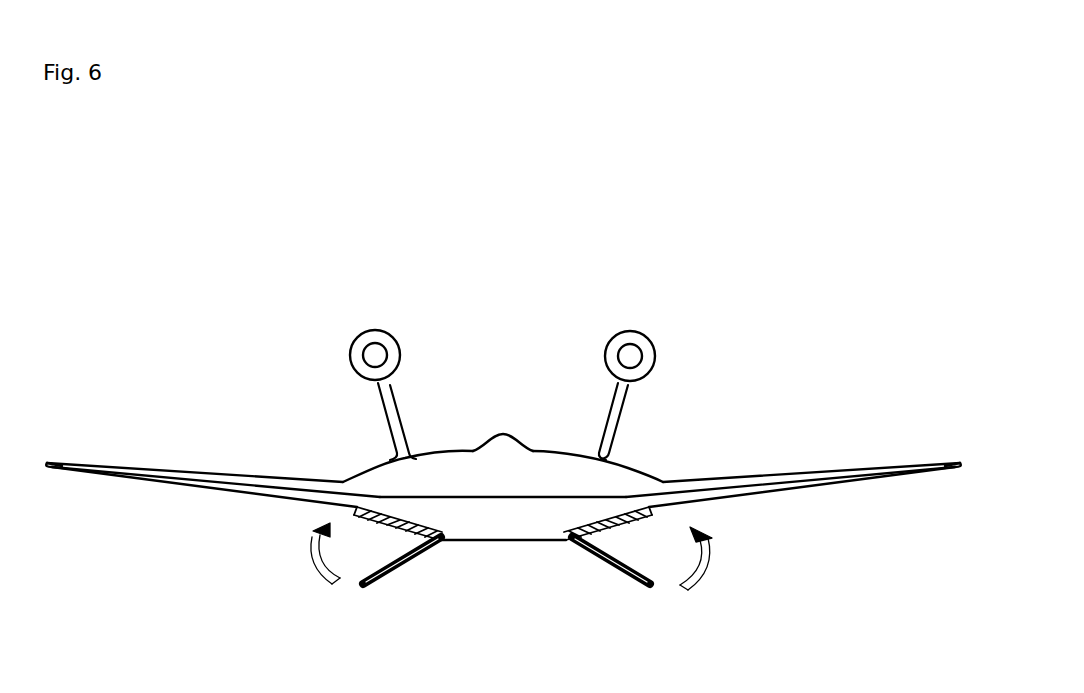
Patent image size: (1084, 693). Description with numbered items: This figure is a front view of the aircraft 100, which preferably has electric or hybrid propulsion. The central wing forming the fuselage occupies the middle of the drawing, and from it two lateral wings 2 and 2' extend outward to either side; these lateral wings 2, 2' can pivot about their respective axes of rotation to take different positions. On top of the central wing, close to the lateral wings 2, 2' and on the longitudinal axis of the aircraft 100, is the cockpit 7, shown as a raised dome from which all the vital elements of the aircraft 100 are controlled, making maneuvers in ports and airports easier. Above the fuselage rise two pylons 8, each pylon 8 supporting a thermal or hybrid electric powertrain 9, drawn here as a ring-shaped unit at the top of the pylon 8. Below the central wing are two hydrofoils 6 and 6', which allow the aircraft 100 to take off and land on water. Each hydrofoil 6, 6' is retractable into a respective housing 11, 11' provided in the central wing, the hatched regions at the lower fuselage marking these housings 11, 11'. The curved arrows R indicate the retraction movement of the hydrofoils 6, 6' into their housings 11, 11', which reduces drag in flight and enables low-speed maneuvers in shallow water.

The aircraft 100 is at (497, 305).
The lateral wing 2 is at (793, 437).
The lateral wing 2' is at (213, 427).
The hydrofoil 6 is at (592, 594).
The hydrofoil 6' is at (410, 611).
The cockpit 7 is at (501, 434).
The pylon 8 is at (390, 428).
The powertrain 9 is at (372, 354).
The housing 11 is at (649, 575).
The housing 11' is at (356, 575).
The retraction arrows R is at (511, 556).